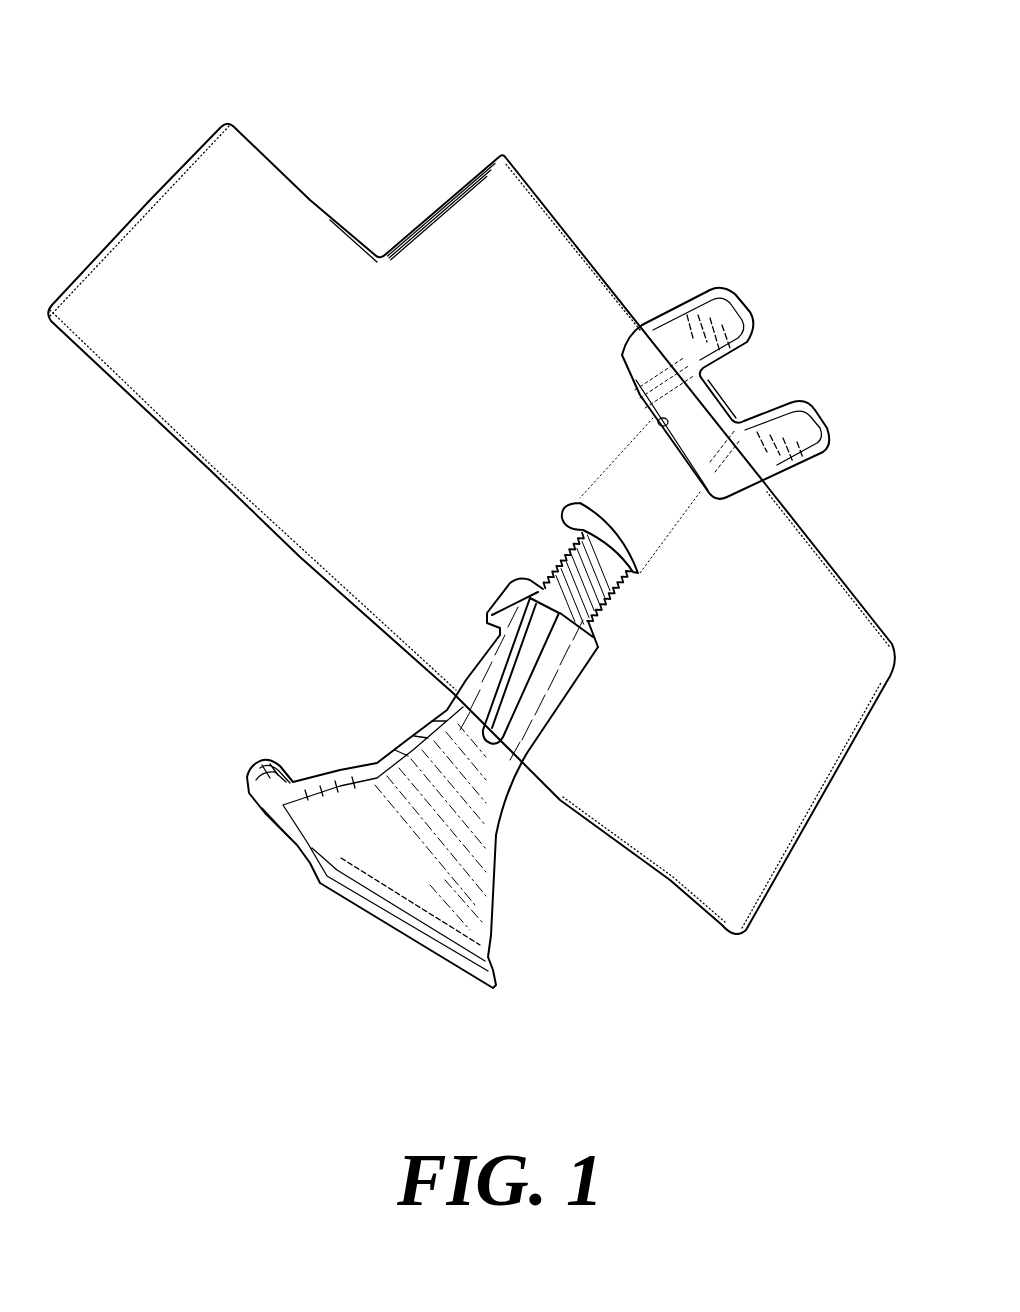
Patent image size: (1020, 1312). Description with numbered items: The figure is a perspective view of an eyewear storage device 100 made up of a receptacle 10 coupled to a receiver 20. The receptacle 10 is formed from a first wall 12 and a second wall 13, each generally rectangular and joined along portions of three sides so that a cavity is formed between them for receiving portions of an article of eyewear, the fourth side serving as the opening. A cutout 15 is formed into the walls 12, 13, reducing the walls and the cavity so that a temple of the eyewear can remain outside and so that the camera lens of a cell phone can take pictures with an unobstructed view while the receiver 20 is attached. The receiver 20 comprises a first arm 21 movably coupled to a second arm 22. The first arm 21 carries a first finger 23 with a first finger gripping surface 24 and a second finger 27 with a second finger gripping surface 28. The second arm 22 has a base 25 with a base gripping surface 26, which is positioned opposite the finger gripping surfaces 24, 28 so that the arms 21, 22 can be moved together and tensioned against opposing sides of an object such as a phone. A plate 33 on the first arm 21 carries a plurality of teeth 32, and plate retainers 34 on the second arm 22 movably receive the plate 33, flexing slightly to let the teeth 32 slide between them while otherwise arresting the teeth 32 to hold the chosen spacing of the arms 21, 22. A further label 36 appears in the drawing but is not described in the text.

The eyewear storage device 100 is at (180, 86).
The receptacle 10 is at (246, 541).
The first wall 12 is at (493, 238).
The second wall 13 is at (400, 240).
The cutout 15 is at (422, 206).
The receiver 20 is at (622, 645).
The first arm 21 is at (828, 480).
The second arm 22 is at (527, 830).
The first finger 23 is at (713, 320).
The first finger gripping surface 24 is at (690, 322).
The base 25 is at (307, 855).
The base gripping surface 26 is at (448, 930).
The second finger 27 is at (800, 437).
The second finger gripping surface 28 is at (780, 433).
The teeth 32 is at (548, 588).
The plate 33 is at (578, 503).
The plate retainers 34 is at (510, 607).
The hook 36 is at (247, 778).